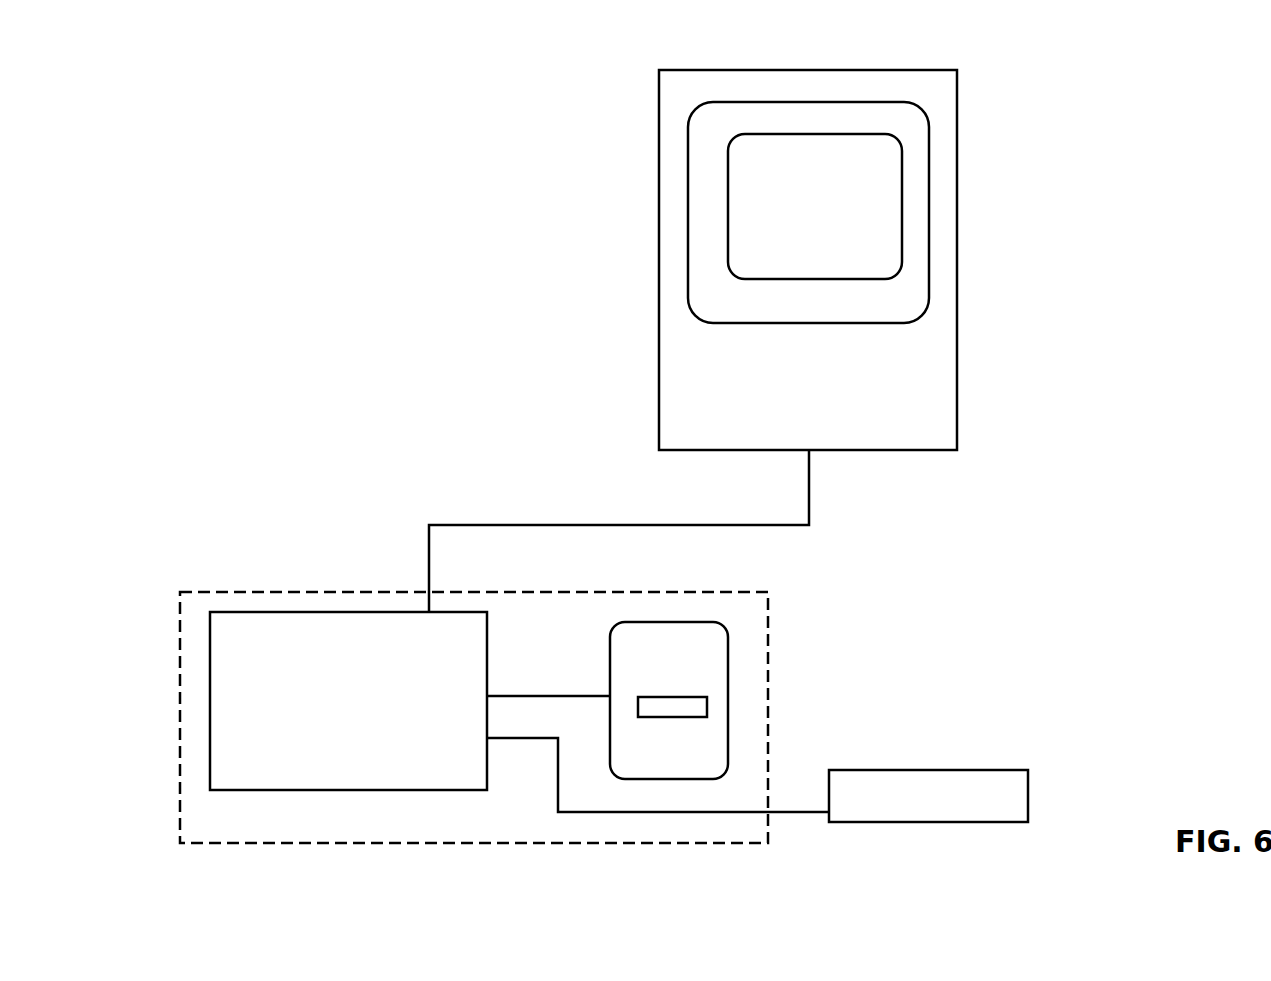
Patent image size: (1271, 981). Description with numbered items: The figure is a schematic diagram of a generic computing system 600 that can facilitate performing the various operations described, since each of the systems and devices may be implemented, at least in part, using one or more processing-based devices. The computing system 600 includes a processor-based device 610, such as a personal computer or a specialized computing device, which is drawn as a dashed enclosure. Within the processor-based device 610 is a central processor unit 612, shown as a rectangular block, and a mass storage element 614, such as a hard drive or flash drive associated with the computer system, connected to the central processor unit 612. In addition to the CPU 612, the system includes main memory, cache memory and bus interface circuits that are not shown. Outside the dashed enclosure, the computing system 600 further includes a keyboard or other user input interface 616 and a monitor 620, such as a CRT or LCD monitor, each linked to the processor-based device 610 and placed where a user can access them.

The generic computing system 600 is at (399, 137).
The processor-based device 610 is at (586, 843).
The central processor unit 612 is at (359, 612).
The mass storage element 614 is at (728, 672).
The user input interface 616 is at (848, 770).
The monitor 620 is at (659, 157).